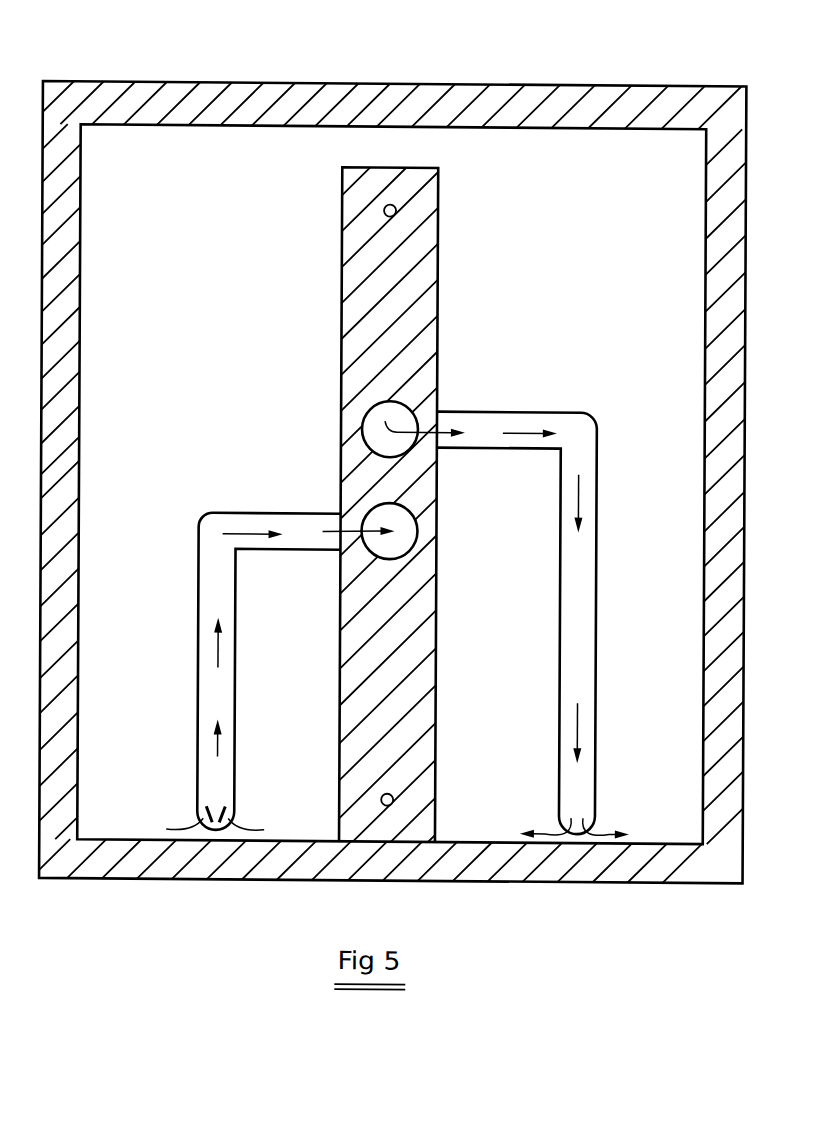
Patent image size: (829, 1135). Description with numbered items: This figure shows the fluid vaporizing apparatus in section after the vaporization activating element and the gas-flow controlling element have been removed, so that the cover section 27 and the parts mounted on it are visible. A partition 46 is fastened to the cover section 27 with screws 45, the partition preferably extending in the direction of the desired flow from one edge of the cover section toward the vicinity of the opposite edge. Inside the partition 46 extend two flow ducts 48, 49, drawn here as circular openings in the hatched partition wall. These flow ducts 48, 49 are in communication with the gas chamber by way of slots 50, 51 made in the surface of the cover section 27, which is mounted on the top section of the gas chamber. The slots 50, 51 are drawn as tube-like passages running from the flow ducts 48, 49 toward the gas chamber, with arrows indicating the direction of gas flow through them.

The housing wall 27 is at (269, 97).
The bores 45 is at (402, 207).
The partition wall 46 is at (413, 281).
The outlet opening 48 is at (393, 412).
The inlet opening 49 is at (404, 530).
The outlet pipe 50 is at (580, 651).
The inlet pipe 51 is at (215, 777).